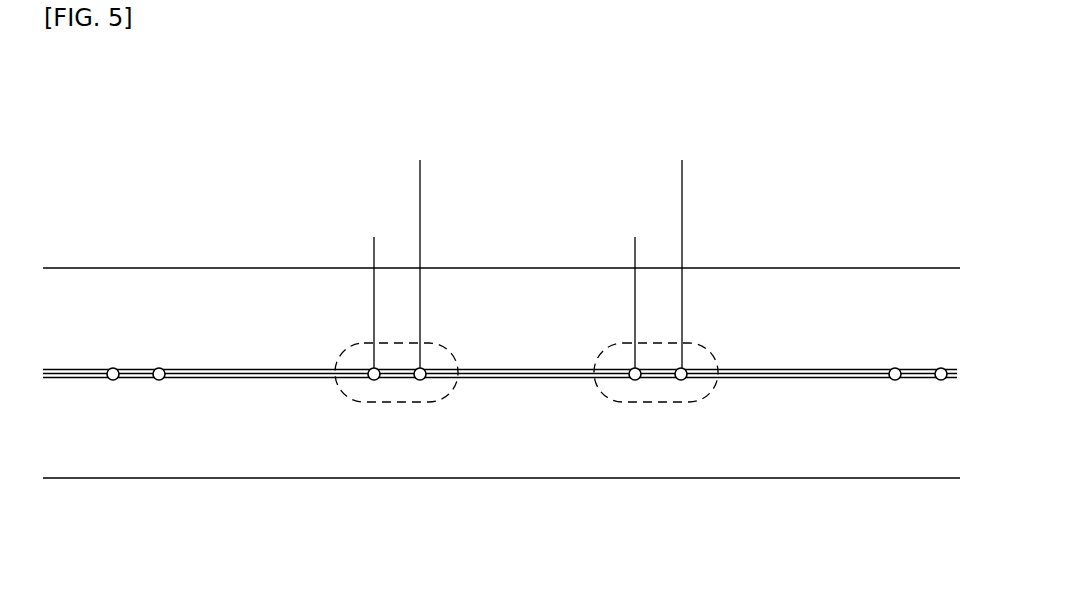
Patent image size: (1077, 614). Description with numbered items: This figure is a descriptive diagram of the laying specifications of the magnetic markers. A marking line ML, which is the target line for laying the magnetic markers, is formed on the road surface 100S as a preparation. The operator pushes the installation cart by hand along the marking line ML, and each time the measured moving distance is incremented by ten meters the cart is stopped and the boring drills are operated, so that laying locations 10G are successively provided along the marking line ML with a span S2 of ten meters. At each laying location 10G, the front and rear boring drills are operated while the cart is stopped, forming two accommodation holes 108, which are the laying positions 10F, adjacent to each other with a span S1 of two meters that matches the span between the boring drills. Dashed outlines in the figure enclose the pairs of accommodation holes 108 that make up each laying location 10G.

The road surface 100S is at (772, 313).
The marking line ML is at (230, 368).
The laying position 10F is at (527, 478).
The accommodation hole 108 is at (368, 380).
The laying location 10G is at (383, 404).
The span between adjacent accommodation holes S1 is at (420, 249).
The span between laying locations S2 is at (682, 195).